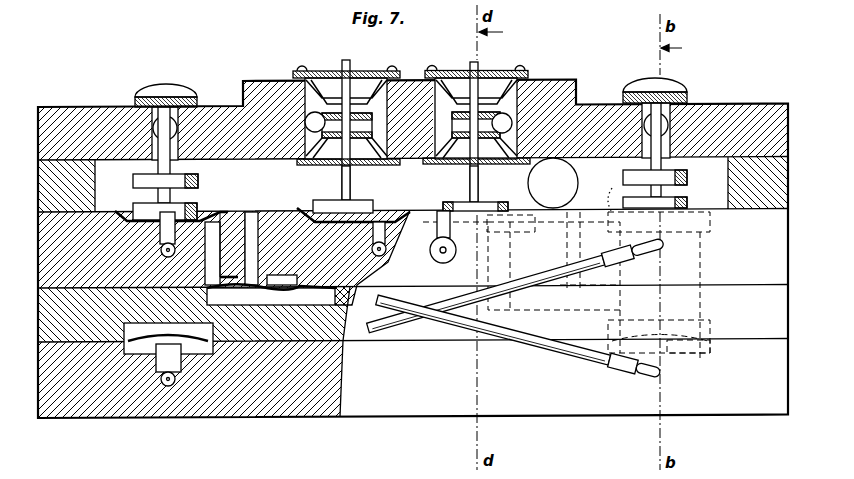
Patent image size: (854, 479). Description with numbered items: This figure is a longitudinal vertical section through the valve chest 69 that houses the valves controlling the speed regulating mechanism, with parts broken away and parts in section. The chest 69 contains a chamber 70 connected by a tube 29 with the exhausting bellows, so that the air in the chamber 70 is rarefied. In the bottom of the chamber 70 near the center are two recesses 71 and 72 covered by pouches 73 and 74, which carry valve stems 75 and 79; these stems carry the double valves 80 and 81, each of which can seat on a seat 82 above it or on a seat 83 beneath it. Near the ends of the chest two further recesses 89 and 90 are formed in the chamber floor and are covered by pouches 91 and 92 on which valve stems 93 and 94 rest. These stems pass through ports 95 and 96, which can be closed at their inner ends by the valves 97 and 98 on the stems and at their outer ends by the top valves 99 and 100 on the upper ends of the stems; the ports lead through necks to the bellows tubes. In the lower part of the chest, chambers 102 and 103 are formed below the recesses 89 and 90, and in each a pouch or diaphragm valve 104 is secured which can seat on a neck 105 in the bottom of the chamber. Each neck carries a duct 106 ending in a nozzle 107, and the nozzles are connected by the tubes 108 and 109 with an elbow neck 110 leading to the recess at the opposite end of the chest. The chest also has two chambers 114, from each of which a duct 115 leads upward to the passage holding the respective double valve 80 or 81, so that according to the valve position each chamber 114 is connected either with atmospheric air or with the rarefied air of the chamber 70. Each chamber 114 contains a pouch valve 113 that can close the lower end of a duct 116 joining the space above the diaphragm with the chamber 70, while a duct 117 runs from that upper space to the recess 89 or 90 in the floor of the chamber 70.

The tube 29 is at (553, 183).
The valve chest 69 is at (787, 130).
The chamber 70 is at (702, 193).
The recess 71 is at (278, 216).
The recess 72 is at (535, 223).
The pouch 73 is at (380, 214).
The pouch 74 is at (440, 210).
The valve stem 75 is at (342, 183).
The valve stem 79 is at (480, 185).
The valve 80 is at (400, 80).
The valve 81 is at (530, 90).
The seat 82 is at (350, 78).
The seat 83 is at (364, 166).
The recess 89 is at (124, 216).
The recess 90 is at (712, 222).
The pouch 91 is at (250, 192).
The pouch 92 is at (604, 192).
The valve stem 93 is at (158, 168).
The valve stem 94 is at (688, 176).
The port 95 is at (160, 122).
The port 96 is at (668, 120).
The valve 97 is at (198, 180).
The valve 98 is at (676, 192).
The top valve 99 is at (176, 92).
The top valve 100 is at (668, 86).
The chamber 102 is at (137, 354).
The chamber 103 is at (712, 352).
The pouch or diaphragm valve 104 is at (202, 338).
The neck 105 is at (175, 384).
The duct 106 is at (167, 388).
The nozzle 107 is at (651, 378).
The tube 108 is at (405, 330).
The tube 109 is at (540, 352).
The elbow neck 110 is at (666, 248).
The pouch valve 113 is at (271, 295).
The chamber 114 is at (292, 290).
The duct 115 is at (308, 186).
The duct 116 is at (252, 212).
The duct 117 is at (664, 233).